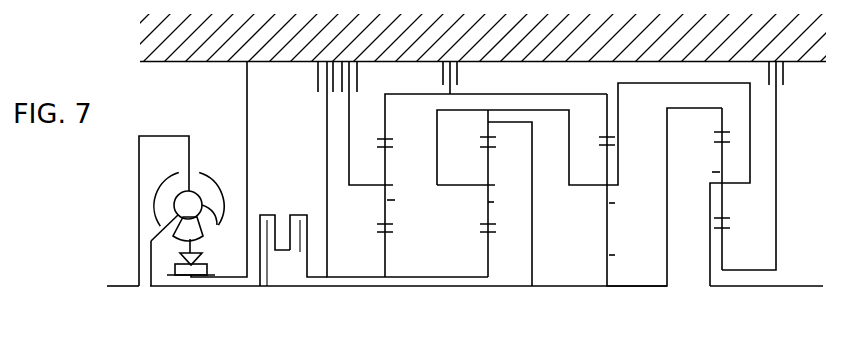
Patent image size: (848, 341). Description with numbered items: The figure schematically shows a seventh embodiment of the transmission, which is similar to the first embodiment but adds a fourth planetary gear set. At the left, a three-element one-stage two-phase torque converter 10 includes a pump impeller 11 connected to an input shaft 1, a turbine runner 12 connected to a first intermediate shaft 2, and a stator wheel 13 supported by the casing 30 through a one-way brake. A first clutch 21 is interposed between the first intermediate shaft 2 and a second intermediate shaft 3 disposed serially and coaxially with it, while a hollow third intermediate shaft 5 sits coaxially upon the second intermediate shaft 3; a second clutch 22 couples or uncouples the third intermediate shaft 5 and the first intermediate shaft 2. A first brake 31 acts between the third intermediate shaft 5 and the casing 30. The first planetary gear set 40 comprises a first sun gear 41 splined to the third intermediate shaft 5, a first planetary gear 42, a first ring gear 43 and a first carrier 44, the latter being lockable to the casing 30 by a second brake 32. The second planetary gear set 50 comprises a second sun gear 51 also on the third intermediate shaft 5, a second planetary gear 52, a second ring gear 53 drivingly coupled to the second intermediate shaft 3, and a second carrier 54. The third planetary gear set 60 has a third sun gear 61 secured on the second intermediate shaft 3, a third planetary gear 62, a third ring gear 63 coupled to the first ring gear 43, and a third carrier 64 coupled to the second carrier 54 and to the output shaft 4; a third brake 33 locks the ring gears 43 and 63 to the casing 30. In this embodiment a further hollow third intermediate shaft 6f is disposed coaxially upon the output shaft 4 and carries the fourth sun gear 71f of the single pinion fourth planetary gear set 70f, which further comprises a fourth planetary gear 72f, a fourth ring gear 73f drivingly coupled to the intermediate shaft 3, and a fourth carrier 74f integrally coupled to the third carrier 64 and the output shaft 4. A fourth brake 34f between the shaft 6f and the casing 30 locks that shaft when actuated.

The input shaft 1 is at (123, 287).
The first intermediate shaft 2 is at (192, 287).
The second intermediate shaft 3 is at (286, 287).
The output shaft 4 is at (797, 287).
The third intermediate shaft 5 is at (338, 278).
The third intermediate shaft 6f is at (748, 271).
The torque converter 10 is at (215, 181).
The pump impeller 11 is at (220, 214).
The turbine runner 12 is at (172, 191).
The stator wheel 13 is at (182, 233).
The first clutch 21 is at (265, 213).
The second clutch 22 is at (298, 213).
The casing 30 is at (568, 30).
The first brake 31 is at (326, 59).
The second brake 32 is at (351, 59).
The third brake 33 is at (452, 59).
The fourth brake 34f is at (776, 59).
The first planetary gear set 40 is at (382, 248).
The first sun gear 41 is at (387, 250).
The first planetary gear 42 is at (403, 201).
The first ring gear 43 is at (385, 128).
The first carrier 44 is at (362, 186).
The second planetary gear set 50 is at (485, 248).
The second sun gear 51 is at (489, 233).
The second planetary gear 52 is at (503, 201).
The second ring gear 53 is at (488, 128).
The second carrier 54 is at (452, 186).
The third planetary gear set 60 is at (605, 254).
The third sun gear 61 is at (624, 255).
The third planetary gear 62 is at (624, 203).
The third ring gear 63 is at (607, 113).
The third carrier 64 is at (573, 186).
The fourth planetary gear set 70f is at (719, 250).
The fourth sun gear 71f is at (724, 242).
The fourth planetary gear 72f is at (698, 170).
The fourth ring gear 73f is at (722, 118).
The fourth carrier 74f is at (740, 183).